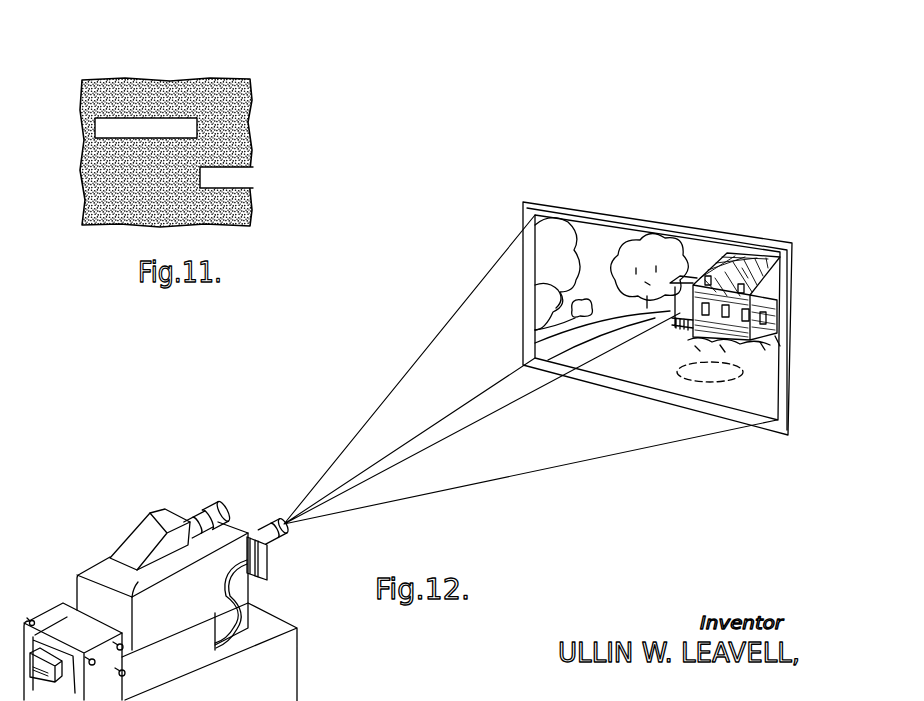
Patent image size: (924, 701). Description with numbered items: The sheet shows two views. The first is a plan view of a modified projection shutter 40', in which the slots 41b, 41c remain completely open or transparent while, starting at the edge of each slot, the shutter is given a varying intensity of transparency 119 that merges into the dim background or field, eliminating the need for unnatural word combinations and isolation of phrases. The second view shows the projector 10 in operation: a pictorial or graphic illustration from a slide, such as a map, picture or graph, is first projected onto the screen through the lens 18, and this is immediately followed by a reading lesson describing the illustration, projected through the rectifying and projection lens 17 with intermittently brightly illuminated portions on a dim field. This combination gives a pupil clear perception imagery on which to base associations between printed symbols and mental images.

In FIG. 11, the shutter 40' is at (172, 123).
In FIG. 11, the varying intensity of transparency 119 is at (203, 110).
In FIG. 11, the slot 41c is at (103, 132).
In FIG. 11, the slot 41b is at (246, 178).
In FIG. 12, the projector 10 is at (94, 563).
In FIG. 12, the rectifying and projection lens 17 is at (222, 505).
In FIG. 12, the lens 18 is at (274, 542).